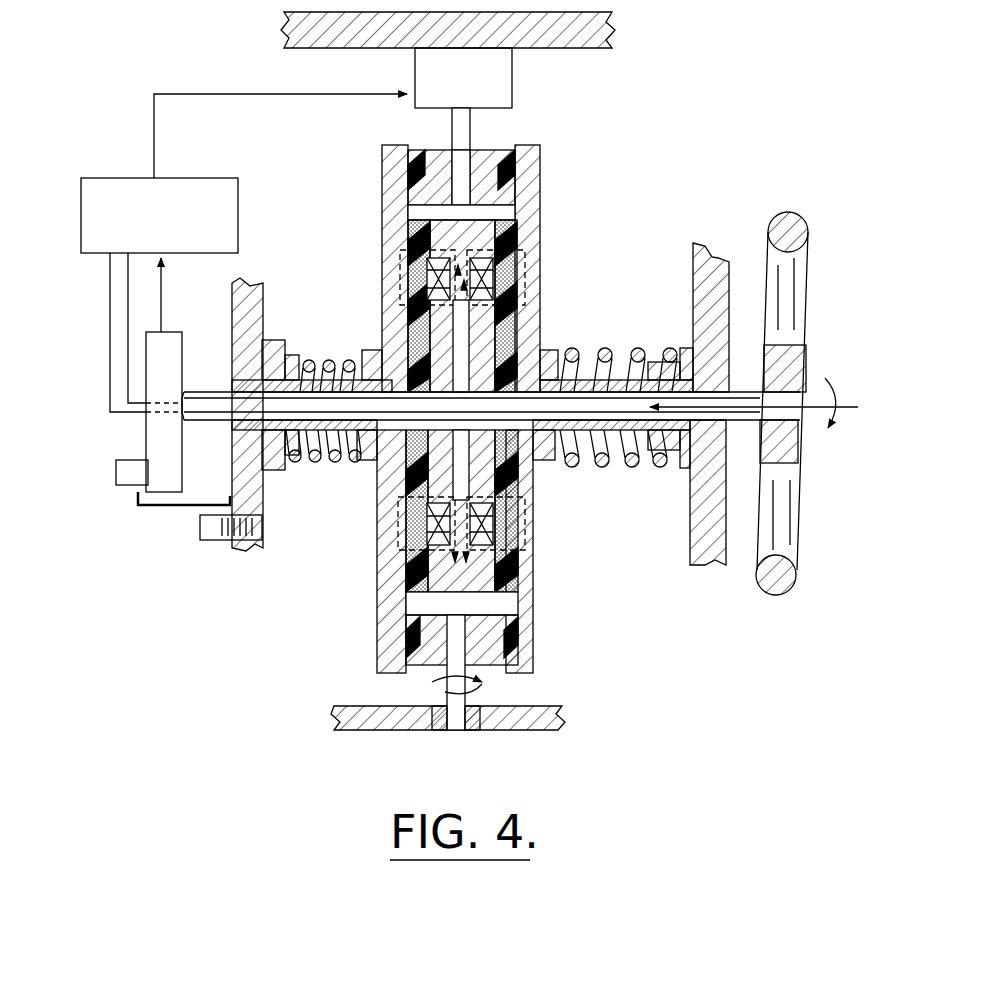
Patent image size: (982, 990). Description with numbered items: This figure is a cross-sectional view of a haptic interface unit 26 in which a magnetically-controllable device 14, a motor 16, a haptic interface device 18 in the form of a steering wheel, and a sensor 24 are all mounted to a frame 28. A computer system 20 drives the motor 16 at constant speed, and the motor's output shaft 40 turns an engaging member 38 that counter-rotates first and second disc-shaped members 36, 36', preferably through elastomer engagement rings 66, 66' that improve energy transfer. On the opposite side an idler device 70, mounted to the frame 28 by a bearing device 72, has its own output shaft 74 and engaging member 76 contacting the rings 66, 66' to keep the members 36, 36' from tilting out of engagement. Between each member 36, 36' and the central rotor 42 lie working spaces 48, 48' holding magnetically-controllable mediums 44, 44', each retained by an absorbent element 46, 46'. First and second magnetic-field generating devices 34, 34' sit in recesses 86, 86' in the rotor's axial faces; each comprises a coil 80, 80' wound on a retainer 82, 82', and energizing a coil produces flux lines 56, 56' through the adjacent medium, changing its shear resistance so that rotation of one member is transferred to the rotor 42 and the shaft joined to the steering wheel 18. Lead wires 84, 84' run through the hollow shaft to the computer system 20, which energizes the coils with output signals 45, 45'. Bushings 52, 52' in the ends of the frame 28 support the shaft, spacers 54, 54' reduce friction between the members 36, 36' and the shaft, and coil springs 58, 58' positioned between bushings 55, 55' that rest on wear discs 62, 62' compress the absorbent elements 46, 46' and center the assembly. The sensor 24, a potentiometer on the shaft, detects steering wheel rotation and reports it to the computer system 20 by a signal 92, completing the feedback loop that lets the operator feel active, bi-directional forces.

The magnetically-controllable device 14 is at (340, 656).
The motor 16 is at (476, 86).
The haptic interface device 18 is at (800, 224).
The computer system 20 is at (182, 178).
The sensor 24 is at (146, 432).
The haptic interface unit 26 is at (758, 146).
The frame 28 is at (615, 30).
The first magnetic-field generating device 34 is at (397, 277).
The second magnetic-field generating device 34' is at (526, 277).
The first disc-shaped member 36 is at (374, 268).
The second disc-shaped member 36' is at (552, 268).
The engaging member 38 is at (480, 160).
The output shaft 40 is at (452, 130).
The central rotor 42 is at (465, 345).
The first magnetically-controllable medium 44 is at (385, 337).
The second magnetically-controllable medium 44' is at (545, 337).
The first output signal 45 is at (155, 328).
The second output signal 45' is at (121, 332).
The first absorbent element 46 is at (415, 521).
The second absorbent element 46' is at (539, 558).
The first working space 48 is at (382, 186).
The second working space 48' is at (542, 186).
The first bushing 52 is at (312, 355).
The second bushing 52' is at (616, 345).
The first spacer 54 is at (374, 551).
The second spacer 54' is at (542, 551).
The first bushing 55 is at (276, 501).
The second bushing 55' is at (614, 492).
The first flux line 56 is at (391, 533).
The second flux line 56' is at (522, 523).
The first coil spring 58 is at (323, 431).
The second coil spring 58' is at (618, 393).
The first wear disc 62 is at (304, 470).
The second wear disc 62' is at (611, 464).
The first engagement ring 66 is at (428, 642).
The second engagement ring 66' is at (539, 641).
The idler device 70 is at (402, 735).
The bearing device 72 is at (438, 732).
The idler output shaft 74 is at (455, 720).
The idler engaging member 76 is at (488, 660).
The first coil 80 is at (385, 305).
The second coil 80' is at (540, 306).
The first retainer 82 is at (369, 514).
The second retainer 82' is at (536, 517).
The first lead wire 84 is at (449, 341).
The second lead wire 84' is at (472, 410).
The first recess 86 is at (388, 595).
The second recess 86' is at (520, 594).
The sensor signal 92 is at (161, 320).